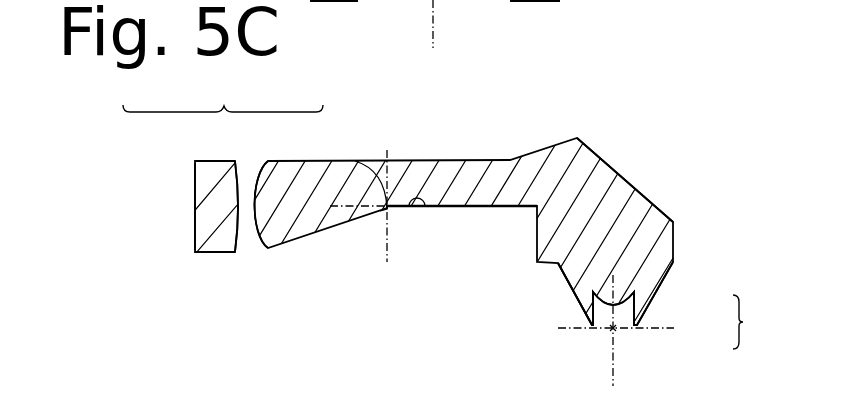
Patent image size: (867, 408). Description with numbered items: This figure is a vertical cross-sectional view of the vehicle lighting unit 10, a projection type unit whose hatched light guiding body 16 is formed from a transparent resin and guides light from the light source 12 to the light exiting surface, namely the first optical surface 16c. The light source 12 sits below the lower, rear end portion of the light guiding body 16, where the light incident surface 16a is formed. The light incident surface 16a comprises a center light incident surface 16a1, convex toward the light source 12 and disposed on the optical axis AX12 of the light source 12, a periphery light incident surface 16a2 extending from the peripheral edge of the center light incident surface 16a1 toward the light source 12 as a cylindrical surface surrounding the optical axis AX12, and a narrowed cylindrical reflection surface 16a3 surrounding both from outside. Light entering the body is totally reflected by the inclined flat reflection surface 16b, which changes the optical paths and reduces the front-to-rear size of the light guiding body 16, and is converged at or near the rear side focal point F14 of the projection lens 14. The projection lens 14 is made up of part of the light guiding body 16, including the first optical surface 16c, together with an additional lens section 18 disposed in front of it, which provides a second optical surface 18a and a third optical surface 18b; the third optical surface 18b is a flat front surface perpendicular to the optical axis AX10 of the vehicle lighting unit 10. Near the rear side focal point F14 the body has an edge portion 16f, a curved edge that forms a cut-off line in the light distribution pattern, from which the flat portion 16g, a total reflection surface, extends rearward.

The vehicle lighting unit 10 is at (513, 123).
The light source 12 is at (612, 330).
The projection lens 14 is at (223, 96).
The light guiding body 16 is at (421, 163).
The light incident surface 16a is at (671, 305).
The center light incident surface 16a1 is at (639, 306).
The periphery light incident surface 16a2 is at (634, 328).
The narrowed cylindrical reflection surface 16a3 is at (566, 281).
The flat reflection surface 16b is at (625, 179).
The first optical surface 16c is at (264, 165).
The edge portion 16f is at (389, 210).
The flat portion 16g is at (424, 205).
The additional lens section 18 is at (218, 161).
The second optical surface 18a is at (245, 167).
The third optical surface 18b is at (193, 177).
The rear side focal point F14 is at (357, 161).
The optical axis of the vehicle lighting unit AX10 is at (334, 232).
The optical axis of the light source AX12 is at (615, 379).